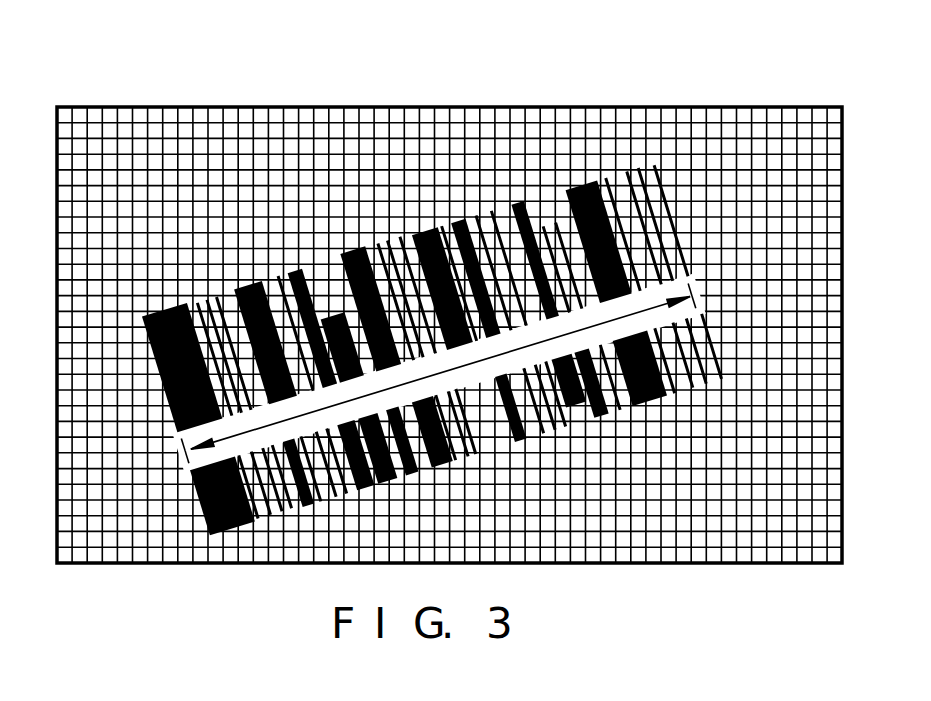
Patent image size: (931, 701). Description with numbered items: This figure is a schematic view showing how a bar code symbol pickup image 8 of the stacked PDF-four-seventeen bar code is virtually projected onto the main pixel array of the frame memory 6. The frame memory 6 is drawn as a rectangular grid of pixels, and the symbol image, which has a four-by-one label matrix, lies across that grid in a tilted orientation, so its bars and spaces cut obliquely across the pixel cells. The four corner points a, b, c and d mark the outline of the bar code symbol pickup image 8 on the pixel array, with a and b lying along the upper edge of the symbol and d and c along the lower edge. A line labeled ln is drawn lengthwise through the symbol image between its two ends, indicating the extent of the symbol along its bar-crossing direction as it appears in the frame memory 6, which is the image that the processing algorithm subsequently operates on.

The frame memory 6 is at (134, 128).
The bar code symbol pickup image 8 is at (582, 180).
The length of bar code symbol along scan line ln is at (441, 373).
The corner point a of bar code symbol a is at (156, 382).
The corner point b of bar code symbol b is at (679, 220).
The corner point c of bar code symbol c is at (715, 348).
The corner point d of bar code symbol d is at (191, 506).